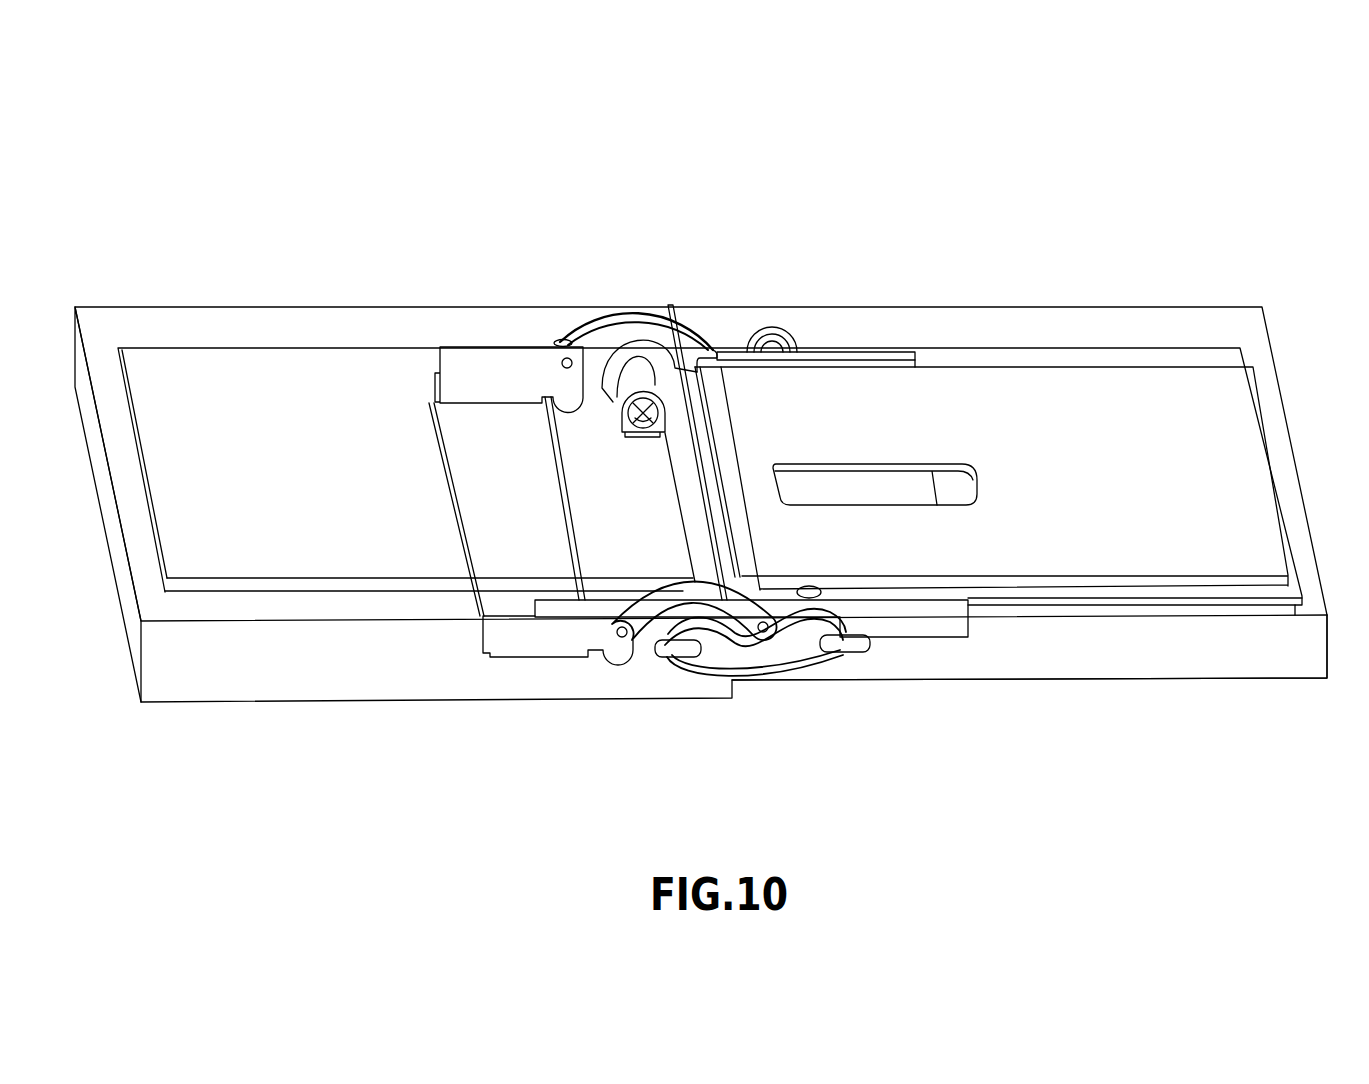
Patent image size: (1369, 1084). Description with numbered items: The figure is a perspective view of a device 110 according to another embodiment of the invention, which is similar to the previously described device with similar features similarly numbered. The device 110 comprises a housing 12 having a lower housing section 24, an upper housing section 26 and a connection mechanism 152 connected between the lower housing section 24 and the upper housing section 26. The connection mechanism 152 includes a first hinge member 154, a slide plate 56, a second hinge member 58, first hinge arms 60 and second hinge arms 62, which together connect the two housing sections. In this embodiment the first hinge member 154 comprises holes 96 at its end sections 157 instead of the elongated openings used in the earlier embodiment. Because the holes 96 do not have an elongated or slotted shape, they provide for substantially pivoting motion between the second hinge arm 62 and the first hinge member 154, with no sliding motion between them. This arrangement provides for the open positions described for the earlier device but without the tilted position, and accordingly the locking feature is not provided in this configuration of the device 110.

The device 110 is at (290, 172).
The connection mechanism 152 is at (652, 245).
The end sections 157 is at (453, 378).
The holes 96 is at (563, 360).
The second hinge arms 62 is at (612, 325).
The housing 12 is at (669, 305).
The first hinge arms 60 is at (768, 337).
The slide plate 56 is at (1208, 413).
The first hinge member 154 is at (478, 497).
The lower housing section 24 is at (212, 672).
The second hinge member 58 is at (947, 630).
The upper housing section 26 is at (1297, 660).